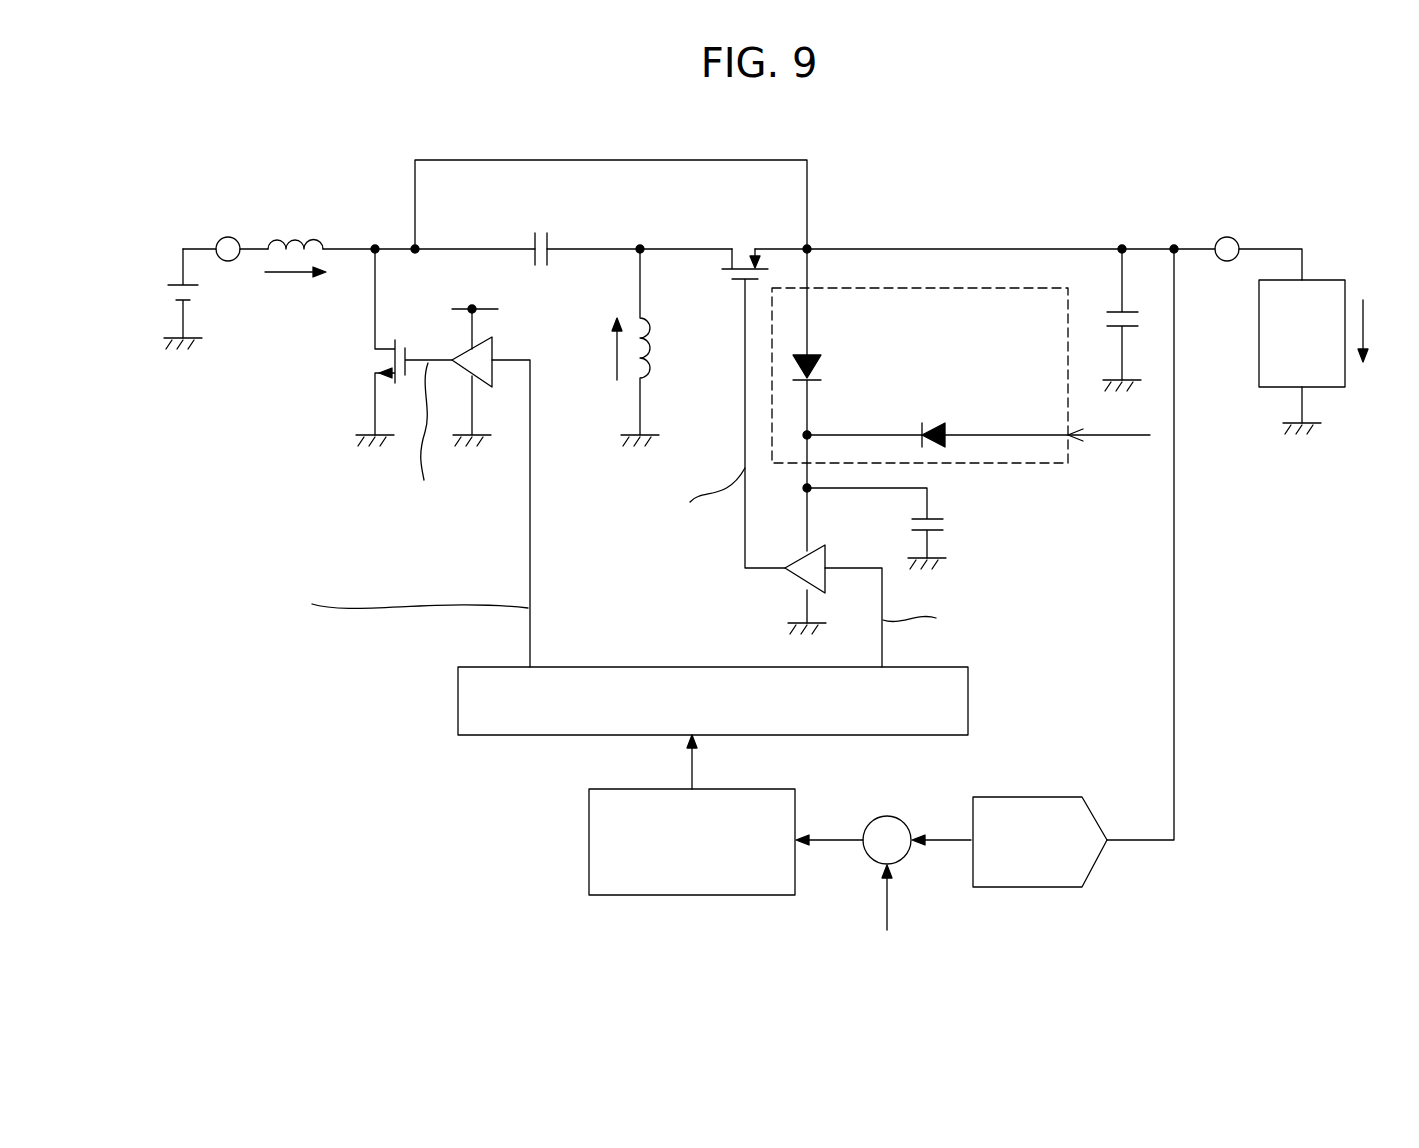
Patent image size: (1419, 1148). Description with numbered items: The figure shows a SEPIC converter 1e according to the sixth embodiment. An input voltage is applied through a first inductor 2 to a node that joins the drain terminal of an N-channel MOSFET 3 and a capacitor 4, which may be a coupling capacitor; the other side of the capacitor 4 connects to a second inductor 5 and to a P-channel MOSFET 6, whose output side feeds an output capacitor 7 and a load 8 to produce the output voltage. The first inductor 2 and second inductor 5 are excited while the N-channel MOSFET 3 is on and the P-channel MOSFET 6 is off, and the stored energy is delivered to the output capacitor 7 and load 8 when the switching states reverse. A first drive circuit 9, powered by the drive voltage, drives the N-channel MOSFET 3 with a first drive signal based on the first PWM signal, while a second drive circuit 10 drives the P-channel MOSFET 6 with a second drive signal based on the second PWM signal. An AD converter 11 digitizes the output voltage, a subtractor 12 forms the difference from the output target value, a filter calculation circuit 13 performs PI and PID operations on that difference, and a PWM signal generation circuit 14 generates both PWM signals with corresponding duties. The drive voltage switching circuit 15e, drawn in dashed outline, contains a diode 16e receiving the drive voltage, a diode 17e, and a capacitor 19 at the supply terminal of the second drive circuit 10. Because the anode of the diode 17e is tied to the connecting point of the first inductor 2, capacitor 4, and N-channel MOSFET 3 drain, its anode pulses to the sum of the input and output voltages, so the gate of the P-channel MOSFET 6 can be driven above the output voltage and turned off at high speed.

The SEPIC converter 1e is at (775, 139).
The first inductor 2 is at (298, 230).
The N-channel MOSFET 3 is at (378, 361).
The capacitor 4 is at (540, 232).
The second inductor 5 is at (633, 378).
The P-channel MOSFET 6 is at (745, 248).
The output capacitor 7 is at (1132, 310).
The load 8 is at (1322, 280).
The first drive circuit 9 is at (465, 350).
The second drive circuit 10 is at (796, 580).
The AD converter 11 is at (1055, 797).
The subtractor 12 is at (890, 816).
The filter calculation circuit 13 is at (620, 895).
The PWM signal generation circuit 14 is at (458, 706).
The drive voltage switching circuit 15e is at (1034, 465).
The diode 16e is at (936, 425).
The diode 17e is at (812, 357).
The capacitor 19 is at (945, 525).